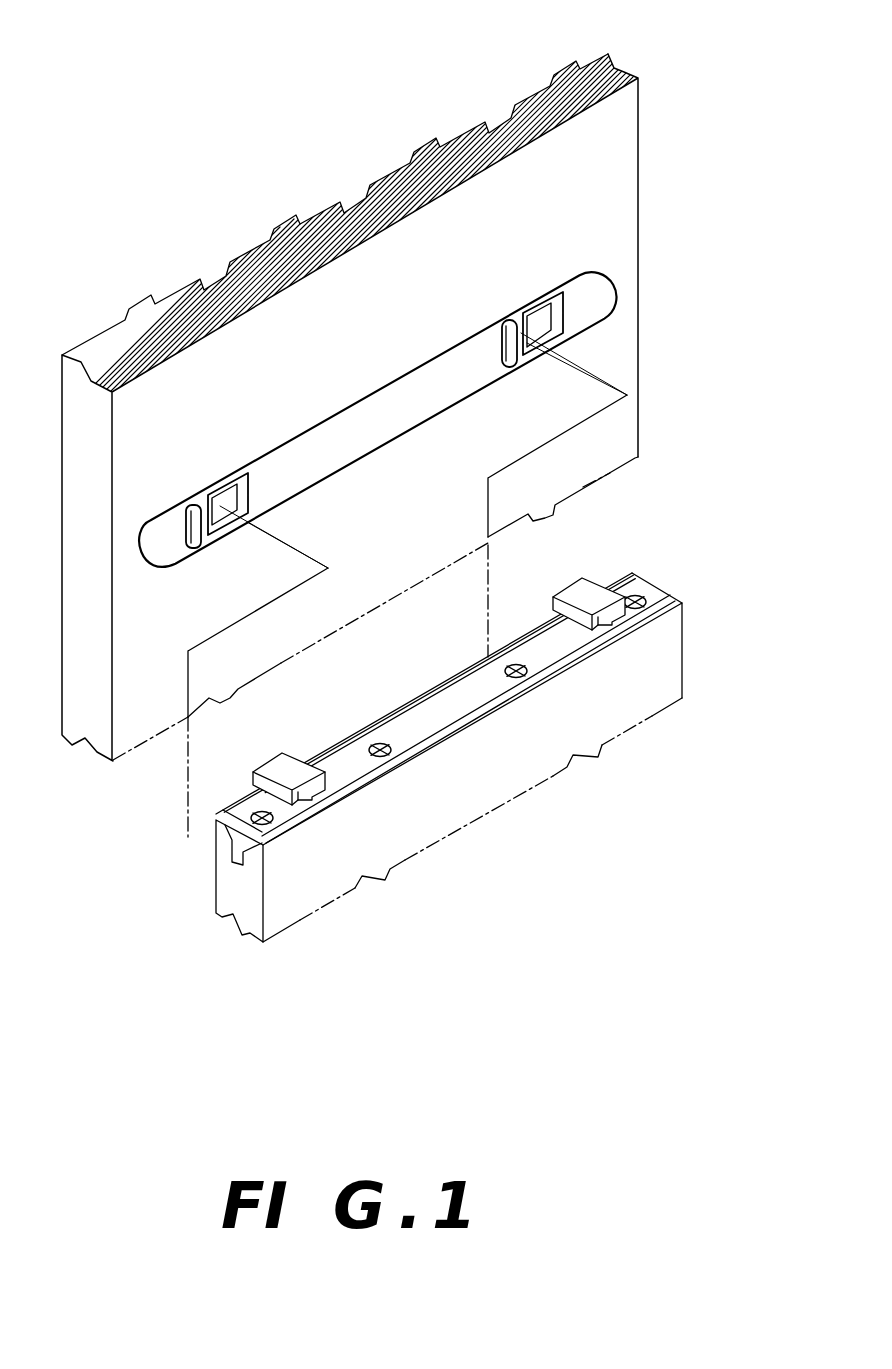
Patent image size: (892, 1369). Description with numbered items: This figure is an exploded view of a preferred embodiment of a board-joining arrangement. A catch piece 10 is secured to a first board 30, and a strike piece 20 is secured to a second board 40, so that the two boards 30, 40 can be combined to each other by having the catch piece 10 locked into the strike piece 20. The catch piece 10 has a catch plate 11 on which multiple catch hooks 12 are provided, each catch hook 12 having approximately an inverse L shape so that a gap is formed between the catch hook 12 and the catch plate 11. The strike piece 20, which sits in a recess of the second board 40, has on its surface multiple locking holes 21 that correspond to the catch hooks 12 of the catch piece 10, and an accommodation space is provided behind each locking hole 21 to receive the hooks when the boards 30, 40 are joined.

The second board 40 is at (619, 162).
The strike piece 20 is at (590, 302).
The locking hole 21 is at (232, 503).
The catch piece 10 is at (658, 594).
The catch plate 11 is at (450, 713).
The catch hook 12 is at (287, 770).
The first board 30 is at (250, 898).